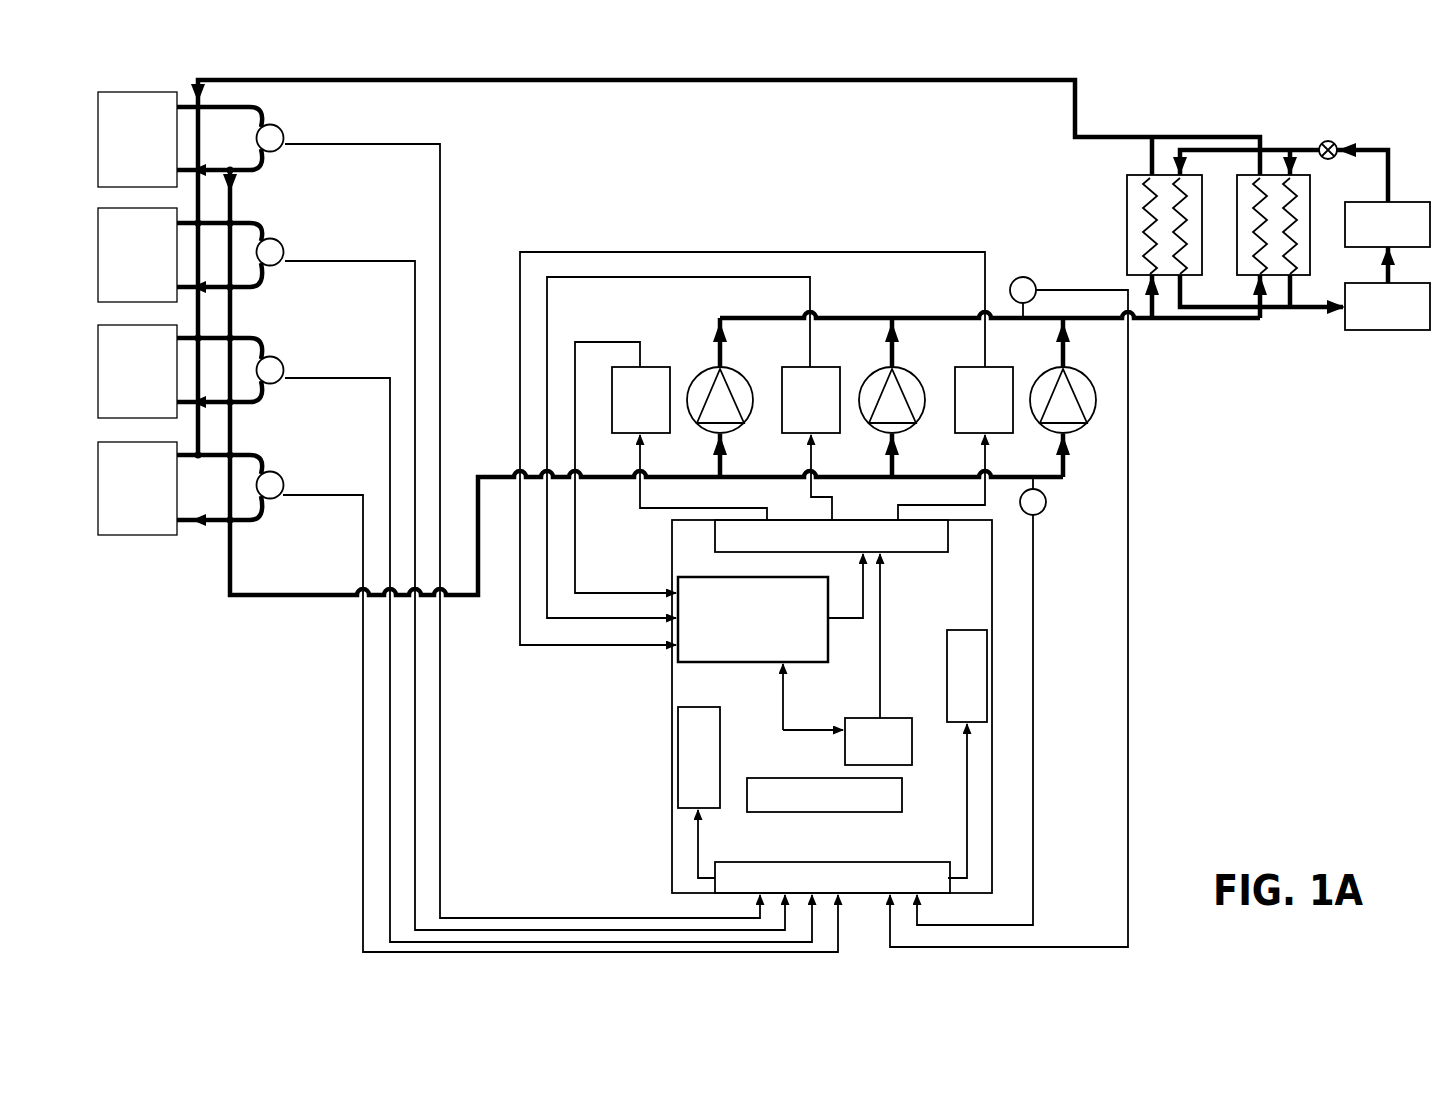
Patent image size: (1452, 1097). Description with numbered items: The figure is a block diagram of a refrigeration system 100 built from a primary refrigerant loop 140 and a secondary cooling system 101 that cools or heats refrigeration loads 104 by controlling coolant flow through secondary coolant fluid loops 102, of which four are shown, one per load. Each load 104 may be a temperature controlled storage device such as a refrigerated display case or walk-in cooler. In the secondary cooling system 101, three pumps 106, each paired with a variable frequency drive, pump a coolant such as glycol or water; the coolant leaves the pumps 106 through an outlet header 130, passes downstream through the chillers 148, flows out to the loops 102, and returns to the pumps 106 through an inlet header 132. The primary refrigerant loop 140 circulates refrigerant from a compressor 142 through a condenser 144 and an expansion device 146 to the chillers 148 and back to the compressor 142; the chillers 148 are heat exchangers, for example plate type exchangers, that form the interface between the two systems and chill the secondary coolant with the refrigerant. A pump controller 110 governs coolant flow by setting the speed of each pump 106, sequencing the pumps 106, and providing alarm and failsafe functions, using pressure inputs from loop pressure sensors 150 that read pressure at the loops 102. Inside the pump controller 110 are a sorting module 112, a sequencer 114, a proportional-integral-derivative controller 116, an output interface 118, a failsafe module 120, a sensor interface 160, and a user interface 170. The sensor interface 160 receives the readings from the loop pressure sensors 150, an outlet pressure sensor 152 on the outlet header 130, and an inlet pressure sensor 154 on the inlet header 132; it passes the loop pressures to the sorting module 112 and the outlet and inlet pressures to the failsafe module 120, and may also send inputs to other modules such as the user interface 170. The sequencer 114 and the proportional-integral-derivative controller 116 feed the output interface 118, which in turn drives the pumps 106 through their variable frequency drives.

The refrigeration system 100 is at (252, 860).
The secondary cooling system 101 is at (774, 210).
The secondary coolant fluid loop 102 is at (263, 321).
The refrigeration load 104 is at (137, 313).
The pump 106 is at (870, 380).
The pump controller 110 is at (756, 572).
The sorting module 112 is at (656, 766).
The sequencer 114 is at (773, 639).
The proportional-integral-derivative (PID) controller 116 is at (905, 741).
The output interface 118 is at (849, 558).
The failsafe module 120 is at (943, 676).
The outlet header 130 is at (990, 304).
The inlet header 132 is at (868, 480).
The primary refrigerant loop 140 is at (1265, 218).
The compressor 142 is at (1379, 322).
The condenser 144 is at (1398, 204).
The expansion device 146 is at (1353, 136).
The chiller 148 is at (1215, 225).
The loop pressure sensor 150 is at (548, 522).
The outlet pressure sensor 152 is at (1009, 587).
The inlet pressure sensor 154 is at (1006, 701).
The sensor interface 160 is at (840, 854).
The user interface 170 is at (818, 776).